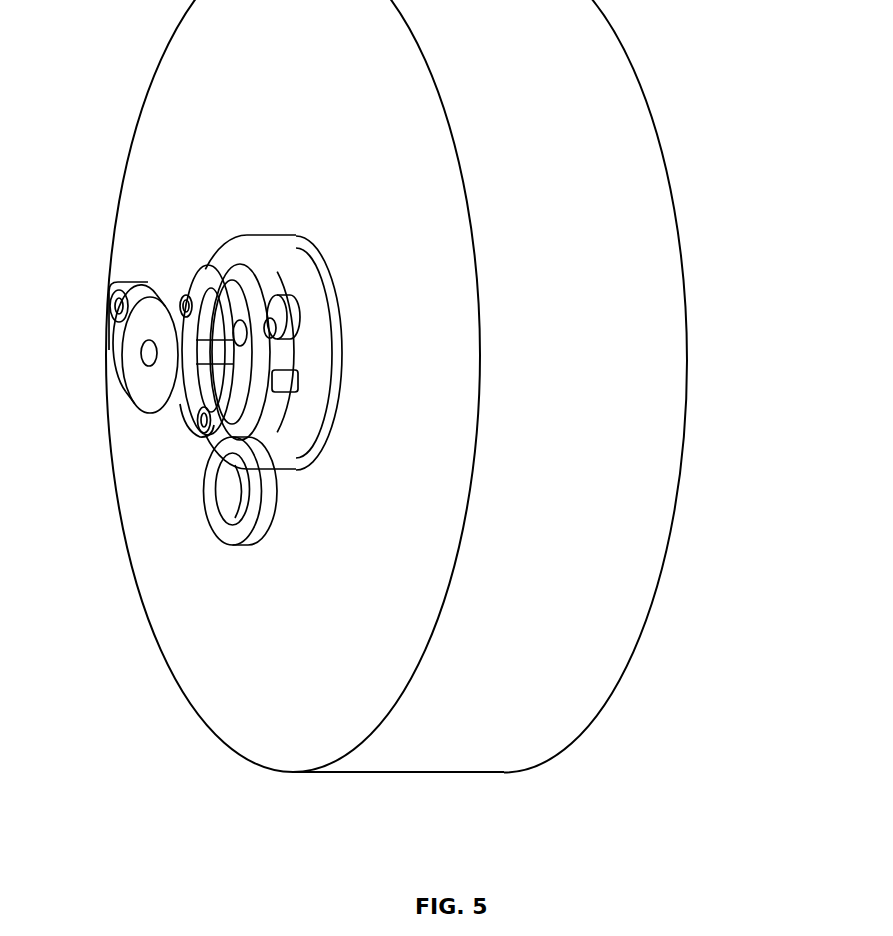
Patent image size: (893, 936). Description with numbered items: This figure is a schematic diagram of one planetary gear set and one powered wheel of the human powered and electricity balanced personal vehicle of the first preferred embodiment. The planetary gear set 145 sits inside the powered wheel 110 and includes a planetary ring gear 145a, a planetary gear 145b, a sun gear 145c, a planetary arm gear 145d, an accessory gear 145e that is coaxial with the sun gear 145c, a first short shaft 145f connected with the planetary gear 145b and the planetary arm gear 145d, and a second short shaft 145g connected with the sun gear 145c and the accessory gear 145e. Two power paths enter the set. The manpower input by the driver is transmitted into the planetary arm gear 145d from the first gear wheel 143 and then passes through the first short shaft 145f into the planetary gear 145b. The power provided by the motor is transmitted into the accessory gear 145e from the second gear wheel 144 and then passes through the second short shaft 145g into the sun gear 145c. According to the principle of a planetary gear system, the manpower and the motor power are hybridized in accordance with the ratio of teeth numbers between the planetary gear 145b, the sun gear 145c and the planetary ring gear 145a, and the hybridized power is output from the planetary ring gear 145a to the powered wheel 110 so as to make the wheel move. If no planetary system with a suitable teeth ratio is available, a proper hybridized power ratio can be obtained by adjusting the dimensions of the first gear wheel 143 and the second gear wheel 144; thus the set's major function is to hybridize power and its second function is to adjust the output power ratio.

The powered wheel 110 is at (627, 657).
The first gear wheel 143 is at (203, 487).
The second gear wheel 144 is at (138, 282).
The planetary gear set 145 is at (480, 350).
The planetary ring gear 145a is at (352, 356).
The planetary gear 145b is at (280, 307).
The sun gear 145c is at (283, 378).
The planetary arm gear 145d is at (247, 292).
The accessory gear 145e is at (158, 297).
The first short shaft 145f is at (277, 333).
The second short shaft 145g is at (215, 352).